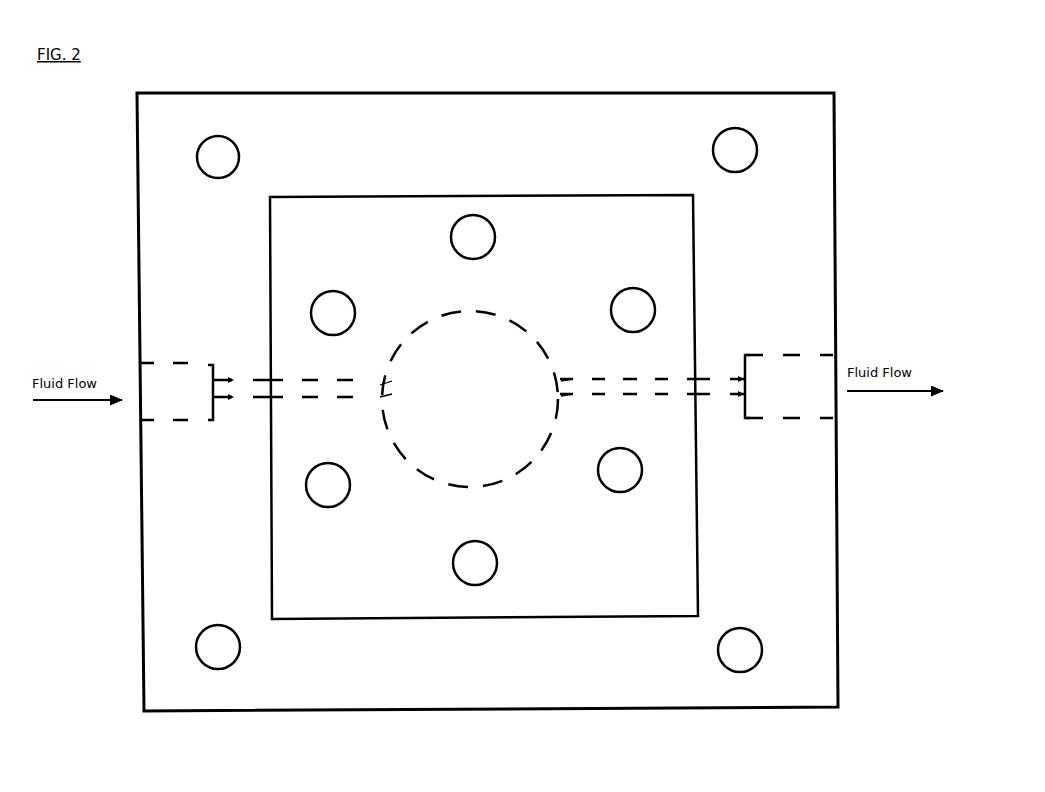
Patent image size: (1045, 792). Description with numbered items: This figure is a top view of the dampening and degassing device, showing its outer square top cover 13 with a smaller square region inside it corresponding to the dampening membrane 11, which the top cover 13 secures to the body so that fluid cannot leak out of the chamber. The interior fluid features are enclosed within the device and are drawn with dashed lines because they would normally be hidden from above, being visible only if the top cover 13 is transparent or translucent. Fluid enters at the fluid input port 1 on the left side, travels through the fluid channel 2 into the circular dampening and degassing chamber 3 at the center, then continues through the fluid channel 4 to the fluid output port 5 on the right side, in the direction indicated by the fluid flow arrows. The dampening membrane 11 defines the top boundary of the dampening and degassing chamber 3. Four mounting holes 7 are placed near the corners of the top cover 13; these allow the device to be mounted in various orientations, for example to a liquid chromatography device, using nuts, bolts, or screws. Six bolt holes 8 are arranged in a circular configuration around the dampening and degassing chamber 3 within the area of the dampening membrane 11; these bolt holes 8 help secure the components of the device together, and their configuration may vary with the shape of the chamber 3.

The fluid input port 1 is at (177, 391).
The fluid channel 2 is at (335, 391).
The dampening and degassing chamber 3 is at (476, 399).
The fluid channel 4 is at (647, 393).
The fluid output port 5 is at (789, 386).
The mounting holes 7 is at (207, 156).
The bolt holes 8 is at (630, 302).
The dampening membrane 11 is at (314, 194).
The top cover 13 is at (400, 90).